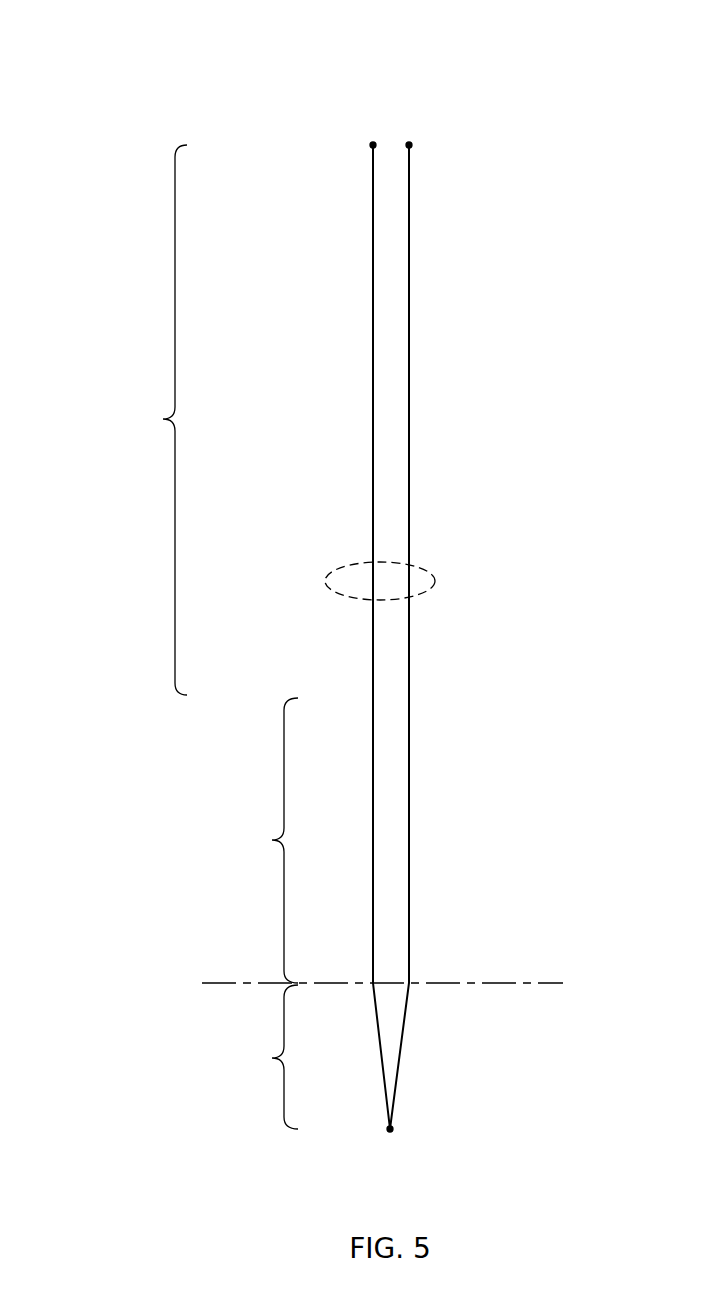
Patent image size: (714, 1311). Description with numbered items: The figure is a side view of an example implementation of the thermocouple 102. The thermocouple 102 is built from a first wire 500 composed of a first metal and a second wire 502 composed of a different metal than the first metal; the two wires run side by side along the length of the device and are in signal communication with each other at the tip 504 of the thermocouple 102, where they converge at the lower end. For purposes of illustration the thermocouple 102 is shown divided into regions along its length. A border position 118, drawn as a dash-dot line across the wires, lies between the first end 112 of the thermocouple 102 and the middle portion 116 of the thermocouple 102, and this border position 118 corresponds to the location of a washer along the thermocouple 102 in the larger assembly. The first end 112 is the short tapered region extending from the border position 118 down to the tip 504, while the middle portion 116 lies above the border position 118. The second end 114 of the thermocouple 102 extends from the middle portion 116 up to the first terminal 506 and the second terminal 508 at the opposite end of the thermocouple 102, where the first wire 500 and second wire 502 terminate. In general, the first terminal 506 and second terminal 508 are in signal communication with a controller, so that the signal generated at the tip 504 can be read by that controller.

The thermocouple 102 is at (435, 581).
The first end 112 is at (261, 1057).
The second end 114 is at (137, 420).
The middle portion 116 is at (248, 840).
The border position 118 is at (520, 983).
The first wire 500 is at (373, 375).
The second wire 502 is at (410, 375).
The tip 504 is at (391, 1129).
The first terminal 506 is at (372, 145).
The second terminal 508 is at (409, 145).